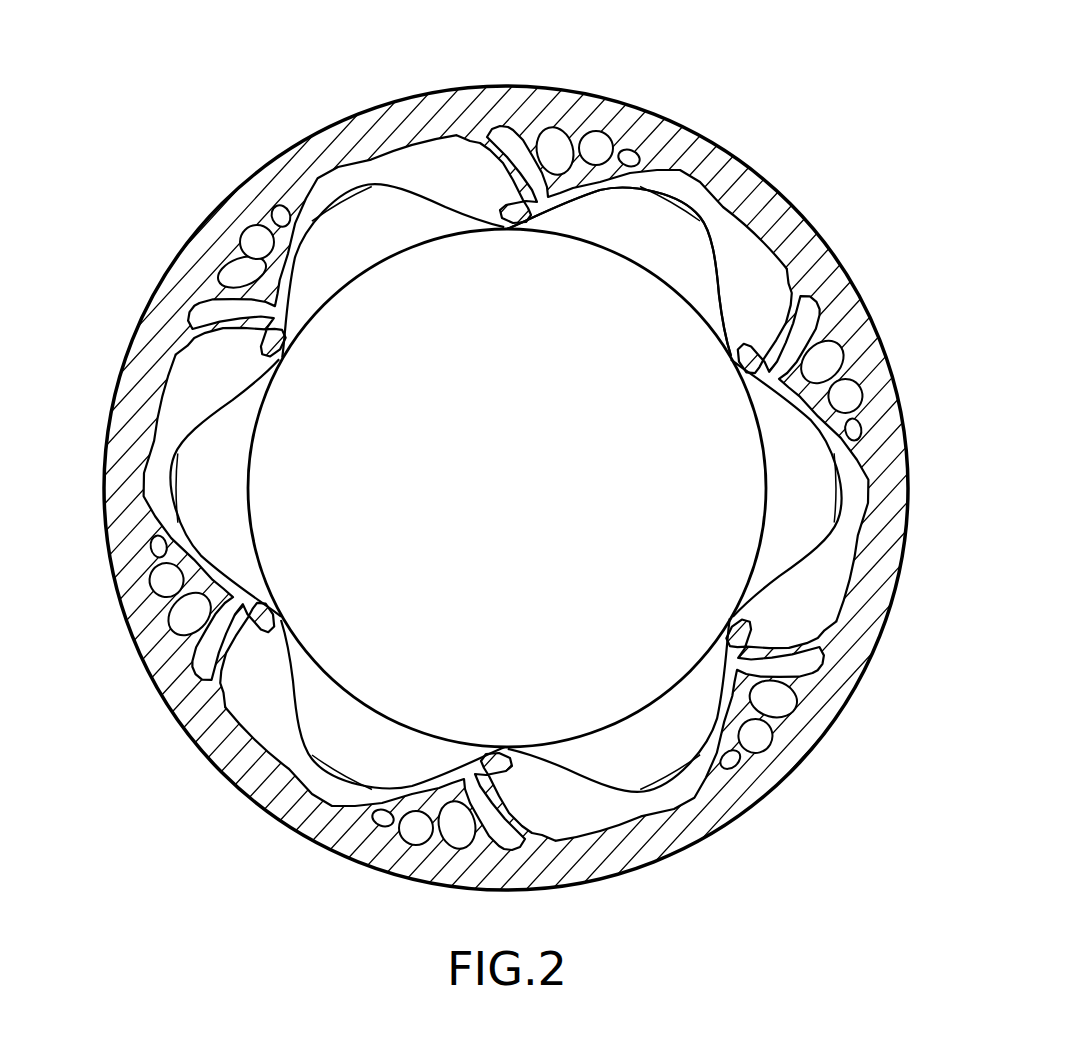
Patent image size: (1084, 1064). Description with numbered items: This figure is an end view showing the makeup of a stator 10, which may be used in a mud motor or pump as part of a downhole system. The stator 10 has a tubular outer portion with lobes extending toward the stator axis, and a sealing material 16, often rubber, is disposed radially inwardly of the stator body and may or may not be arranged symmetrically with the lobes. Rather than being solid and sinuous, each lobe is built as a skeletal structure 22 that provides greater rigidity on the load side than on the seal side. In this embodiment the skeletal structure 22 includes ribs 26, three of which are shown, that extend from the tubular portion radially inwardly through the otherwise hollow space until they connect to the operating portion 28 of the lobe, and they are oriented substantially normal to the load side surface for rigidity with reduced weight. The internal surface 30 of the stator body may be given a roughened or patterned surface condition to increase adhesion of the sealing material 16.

The stator 10 is at (131, 217).
The sealing material 16 is at (795, 598).
The skeletal structure 22 is at (840, 313).
The ribs 26 is at (618, 150).
The operating portion 28 is at (367, 290).
The internal surface 30 is at (749, 262).